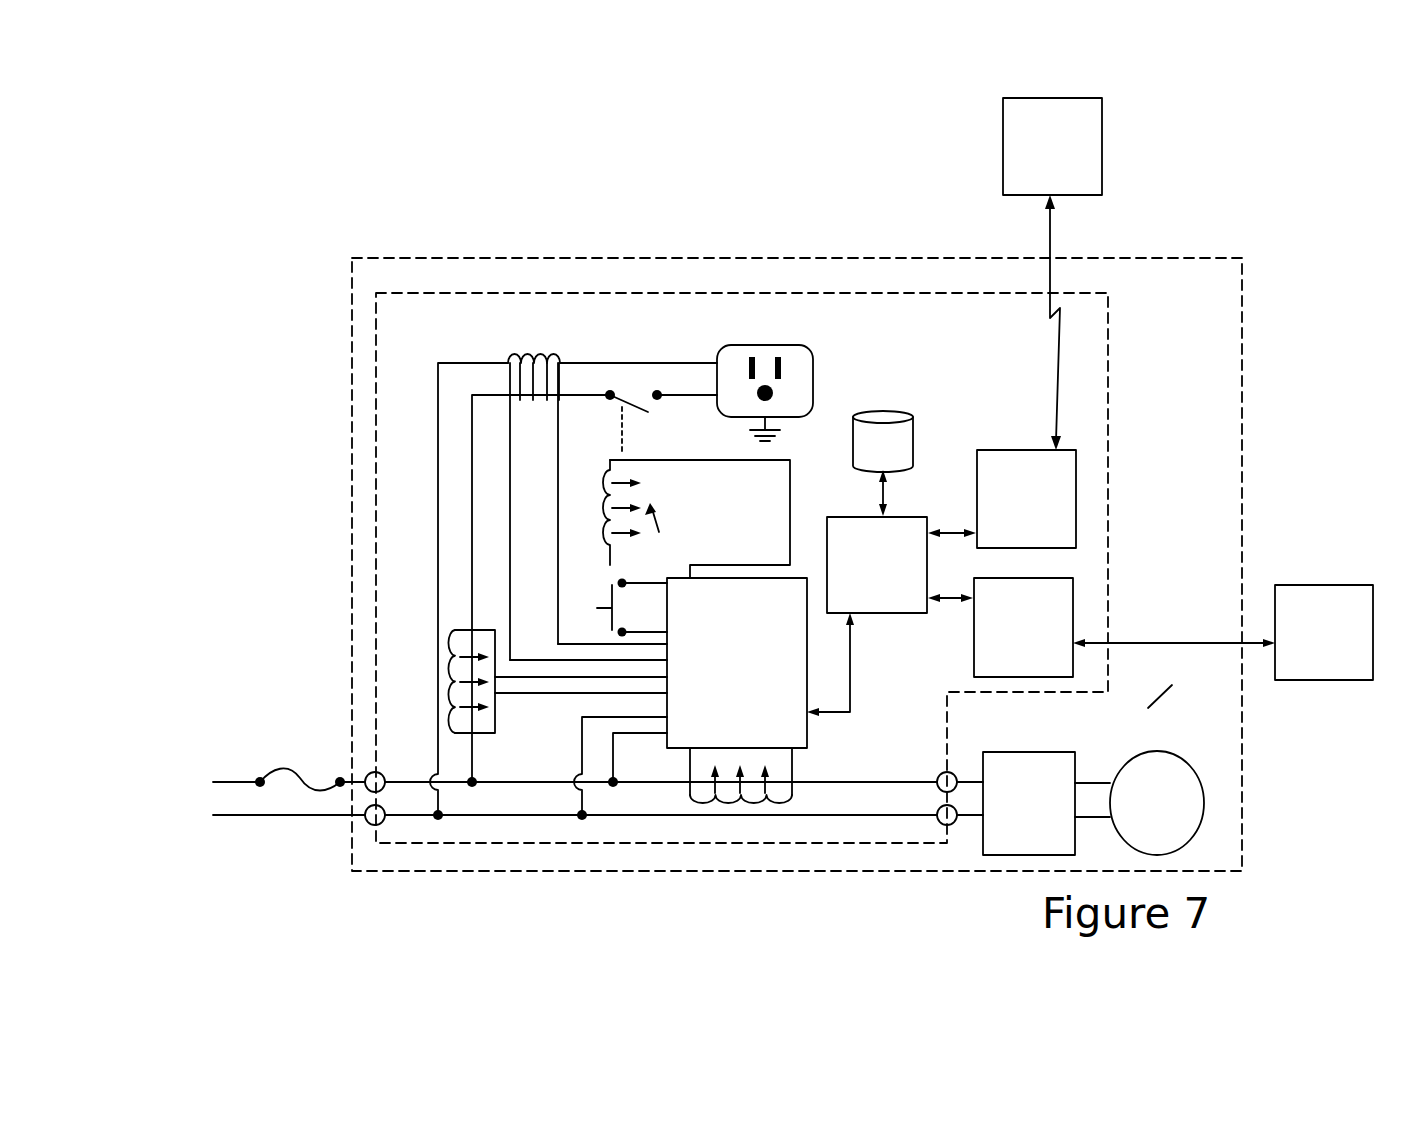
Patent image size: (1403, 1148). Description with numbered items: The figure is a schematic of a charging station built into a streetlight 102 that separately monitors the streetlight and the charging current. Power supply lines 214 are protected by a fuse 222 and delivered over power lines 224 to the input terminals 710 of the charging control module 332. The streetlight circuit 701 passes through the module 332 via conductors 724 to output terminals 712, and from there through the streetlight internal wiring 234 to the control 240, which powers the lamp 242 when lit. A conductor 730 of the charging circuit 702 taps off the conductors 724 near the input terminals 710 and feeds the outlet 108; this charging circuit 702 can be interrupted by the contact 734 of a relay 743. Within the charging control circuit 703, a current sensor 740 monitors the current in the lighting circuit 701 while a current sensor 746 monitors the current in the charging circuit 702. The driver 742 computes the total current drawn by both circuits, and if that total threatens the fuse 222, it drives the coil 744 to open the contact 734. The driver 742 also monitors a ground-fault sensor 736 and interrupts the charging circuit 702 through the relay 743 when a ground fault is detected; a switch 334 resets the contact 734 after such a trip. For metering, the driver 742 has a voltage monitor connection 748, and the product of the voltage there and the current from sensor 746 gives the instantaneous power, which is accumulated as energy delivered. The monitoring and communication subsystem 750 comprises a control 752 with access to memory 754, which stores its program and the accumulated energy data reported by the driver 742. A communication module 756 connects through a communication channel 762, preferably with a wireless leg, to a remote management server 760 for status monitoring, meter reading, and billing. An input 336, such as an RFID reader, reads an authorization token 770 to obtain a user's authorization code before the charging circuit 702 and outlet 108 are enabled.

The streetlight 102 is at (437, 258).
The charging control module 332 is at (540, 293).
The ground-fault sensor 736 is at (508, 354).
The contact 734 is at (628, 402).
The charging circuit 702 is at (840, 358).
The outlet 108 is at (726, 420).
The charging control circuit 703 is at (808, 462).
The coil 744 is at (598, 466).
The relay 743 is at (666, 531).
The driver 742 is at (730, 577).
The switch 334 is at (597, 608).
The conductor 730 is at (472, 492).
The current sensor 746 is at (480, 628).
The voltage monitor connection 748 is at (580, 735).
The conductors 724 is at (558, 783).
The current sensor 740 is at (688, 777).
The fuse 222 is at (283, 762).
The power lines 224 is at (341, 762).
The power supply lines 214 is at (228, 786).
The input terminals 710 is at (386, 793).
The output terminals 712 is at (936, 795).
The memory 754 is at (880, 395).
The control 752 is at (850, 515).
The communication module 756 is at (1023, 435).
The input 336 is at (1023, 563).
The management server 760 is at (1018, 83).
The communication channel 762 is at (1048, 243).
The authorization token 770 is at (1292, 568).
The monitoring and communication subsystem 750 is at (895, 689).
The streetlight circuit 701 is at (1176, 690).
The streetlight internal wiring 234 is at (963, 779).
The control 240 is at (1050, 752).
The lamp 242 is at (1150, 751).